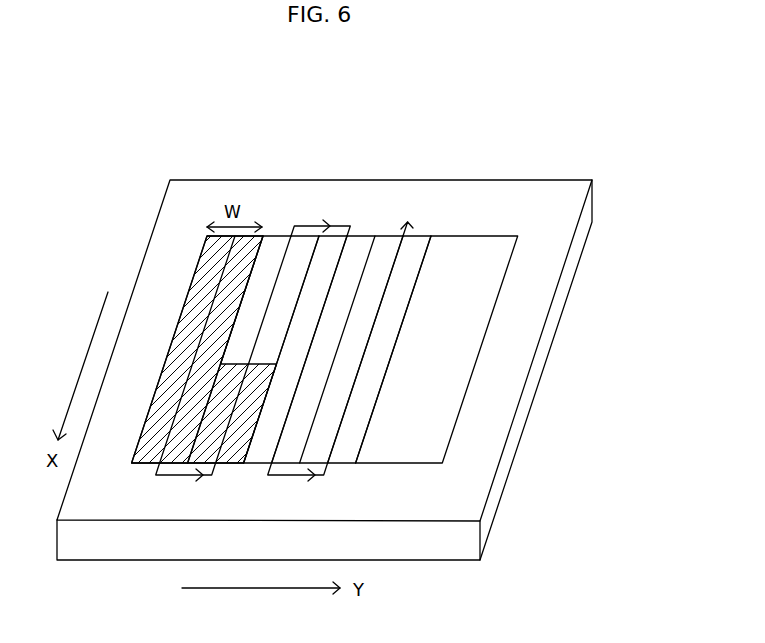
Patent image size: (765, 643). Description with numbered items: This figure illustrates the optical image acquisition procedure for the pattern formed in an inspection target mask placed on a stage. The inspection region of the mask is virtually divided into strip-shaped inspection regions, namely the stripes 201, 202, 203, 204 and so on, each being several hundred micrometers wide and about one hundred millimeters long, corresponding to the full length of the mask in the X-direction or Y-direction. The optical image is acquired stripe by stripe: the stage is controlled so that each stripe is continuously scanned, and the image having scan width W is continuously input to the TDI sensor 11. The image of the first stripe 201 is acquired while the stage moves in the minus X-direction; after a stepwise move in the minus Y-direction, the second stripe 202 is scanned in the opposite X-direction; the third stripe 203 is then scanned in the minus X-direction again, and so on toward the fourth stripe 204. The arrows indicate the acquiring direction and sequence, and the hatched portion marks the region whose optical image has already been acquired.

The TDI sensor 11 is at (552, 412).
The first stripe 201 is at (202, 270).
The second stripe 202 is at (270, 245).
The third stripe 203 is at (358, 245).
The fourth stripe 204 is at (413, 245).